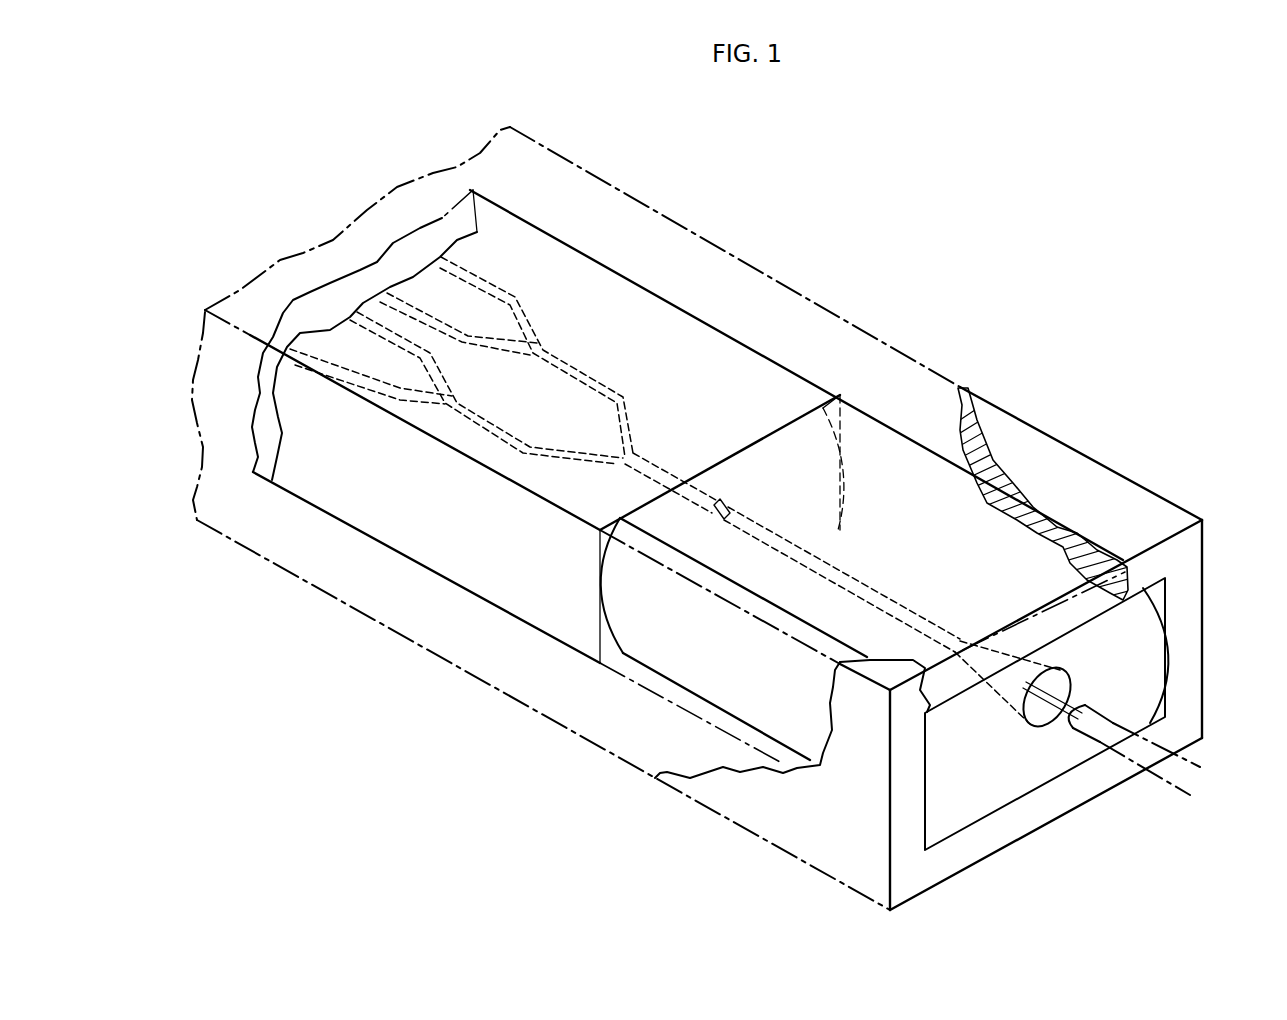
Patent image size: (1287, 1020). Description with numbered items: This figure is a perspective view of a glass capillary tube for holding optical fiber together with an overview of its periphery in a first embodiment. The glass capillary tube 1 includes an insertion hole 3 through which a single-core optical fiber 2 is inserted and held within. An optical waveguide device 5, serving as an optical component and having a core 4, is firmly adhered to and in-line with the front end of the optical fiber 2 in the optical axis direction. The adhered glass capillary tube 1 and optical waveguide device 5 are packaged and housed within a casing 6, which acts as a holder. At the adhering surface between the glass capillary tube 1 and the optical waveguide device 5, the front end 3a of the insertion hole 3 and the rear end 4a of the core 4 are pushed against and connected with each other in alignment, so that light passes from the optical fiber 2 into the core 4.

The glass capillary tube 1 is at (895, 507).
The single-core optical fiber 2 is at (1078, 682).
The insertion hole 3 is at (893, 598).
The front end of the insertion hole 3a is at (750, 517).
The core 4 is at (540, 328).
The rear end of the core 4a is at (660, 470).
The optical waveguide device 5 is at (672, 345).
The casing 6 is at (1080, 481).